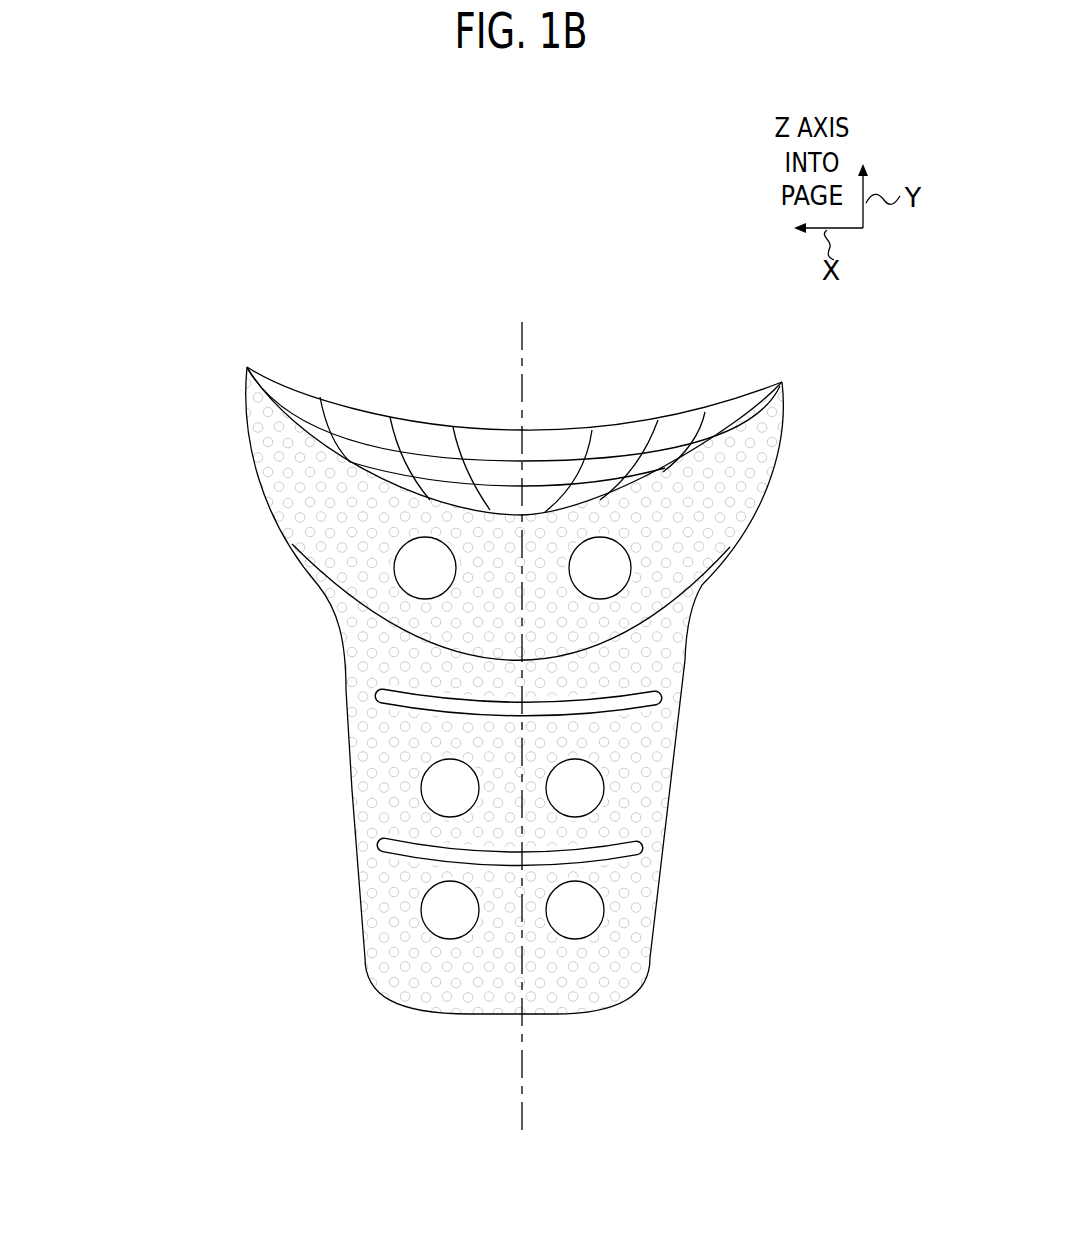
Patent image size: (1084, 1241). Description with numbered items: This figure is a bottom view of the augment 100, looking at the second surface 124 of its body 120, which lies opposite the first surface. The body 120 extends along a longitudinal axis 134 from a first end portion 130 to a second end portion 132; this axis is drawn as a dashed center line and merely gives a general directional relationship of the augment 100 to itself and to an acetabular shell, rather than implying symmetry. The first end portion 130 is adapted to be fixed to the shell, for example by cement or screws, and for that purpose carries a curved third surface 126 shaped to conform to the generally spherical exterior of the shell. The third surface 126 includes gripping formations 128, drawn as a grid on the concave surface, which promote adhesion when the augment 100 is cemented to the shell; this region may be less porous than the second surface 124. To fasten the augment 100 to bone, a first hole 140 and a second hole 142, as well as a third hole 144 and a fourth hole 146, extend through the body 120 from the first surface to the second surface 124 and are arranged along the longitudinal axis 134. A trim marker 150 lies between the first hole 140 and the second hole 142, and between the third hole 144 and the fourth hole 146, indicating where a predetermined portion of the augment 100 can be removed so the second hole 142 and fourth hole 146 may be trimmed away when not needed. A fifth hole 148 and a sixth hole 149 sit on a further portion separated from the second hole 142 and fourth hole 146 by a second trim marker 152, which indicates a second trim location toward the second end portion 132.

The augment 100 is at (203, 160).
The body 120 is at (350, 743).
The second surface 124 is at (377, 723).
The third surface 126 is at (447, 468).
The gripping formations 128 is at (568, 460).
The first end portion 130 is at (228, 373).
The second end portion 132 is at (345, 992).
The longitudinal axis 134 is at (523, 1088).
The first hole 140 is at (603, 568).
The second hole 142 is at (575, 788).
The third hole 144 is at (425, 568).
The fourth hole 146 is at (450, 788).
The fifth hole 148 is at (575, 910).
The sixth hole 149 is at (450, 910).
The trim marker 150 is at (613, 707).
The second trim marker 152 is at (613, 850).